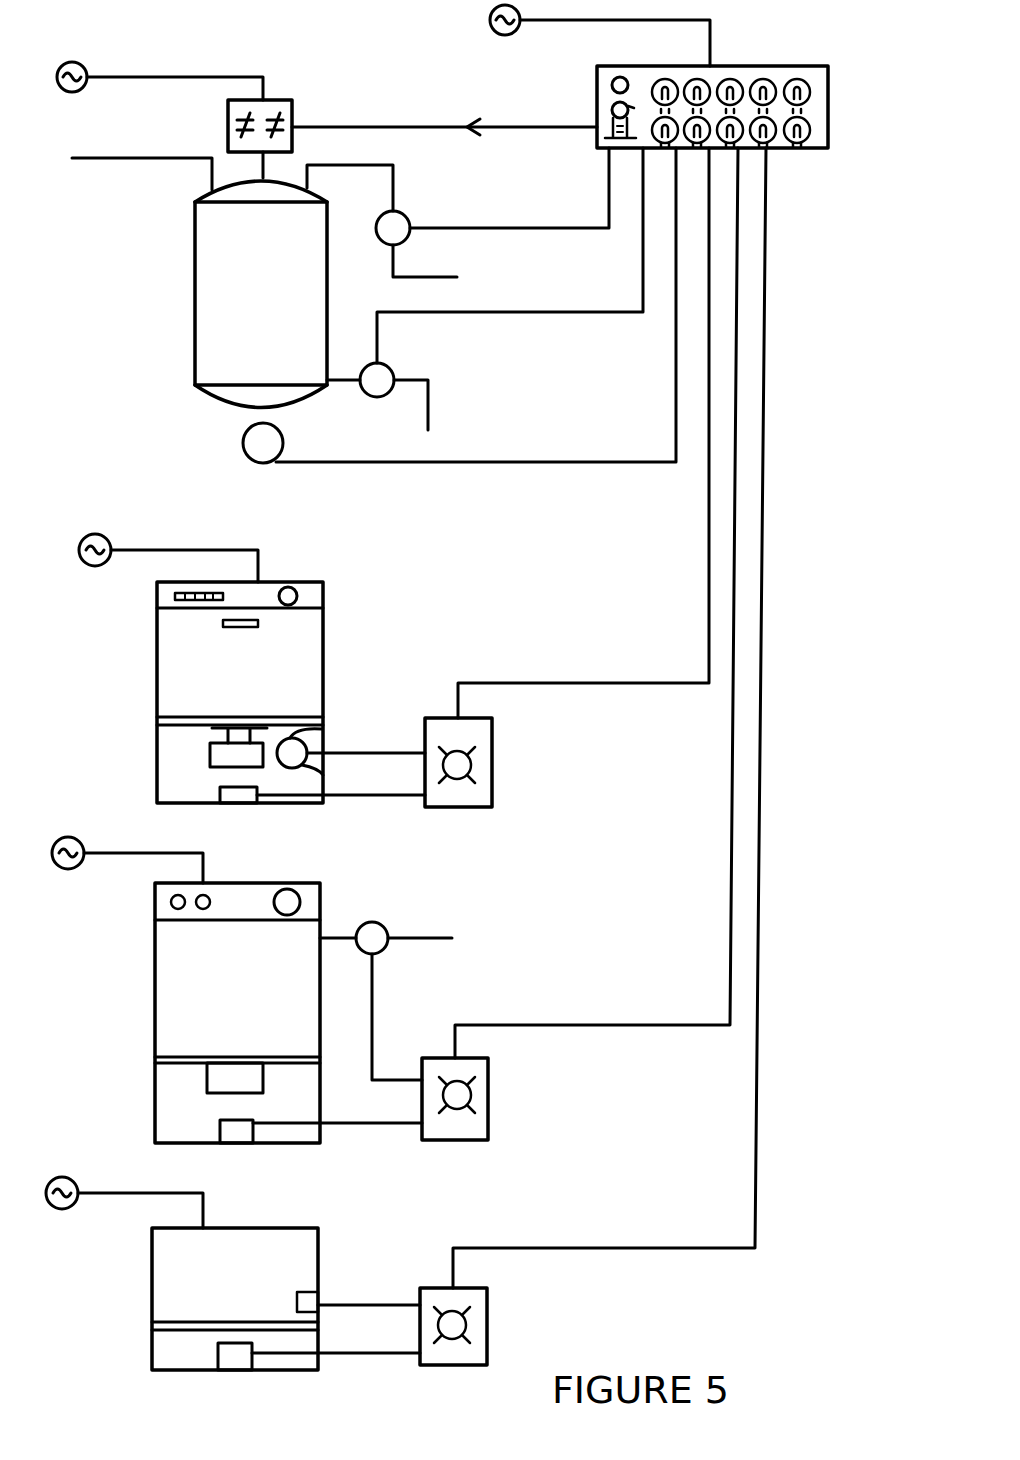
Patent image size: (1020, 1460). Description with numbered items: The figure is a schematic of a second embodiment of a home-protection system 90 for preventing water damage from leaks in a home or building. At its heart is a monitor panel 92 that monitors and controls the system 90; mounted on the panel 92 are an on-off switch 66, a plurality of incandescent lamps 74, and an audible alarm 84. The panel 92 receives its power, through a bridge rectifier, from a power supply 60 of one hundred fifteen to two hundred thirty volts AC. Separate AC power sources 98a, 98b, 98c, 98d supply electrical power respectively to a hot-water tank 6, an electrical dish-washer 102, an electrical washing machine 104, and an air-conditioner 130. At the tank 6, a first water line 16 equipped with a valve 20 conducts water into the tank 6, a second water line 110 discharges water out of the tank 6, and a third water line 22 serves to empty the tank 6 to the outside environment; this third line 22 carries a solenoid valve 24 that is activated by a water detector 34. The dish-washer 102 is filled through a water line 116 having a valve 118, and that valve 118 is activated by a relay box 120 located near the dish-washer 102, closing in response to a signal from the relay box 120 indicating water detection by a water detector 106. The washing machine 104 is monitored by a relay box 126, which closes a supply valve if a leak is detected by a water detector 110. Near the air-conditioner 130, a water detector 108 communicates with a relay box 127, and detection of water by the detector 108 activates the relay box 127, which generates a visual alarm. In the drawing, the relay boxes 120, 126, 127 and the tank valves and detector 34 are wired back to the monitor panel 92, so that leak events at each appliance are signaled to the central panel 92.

The hot-water tank 6 is at (194, 273).
The first water line 16 is at (457, 277).
The valve 20 is at (410, 215).
The third water line 22 is at (430, 418).
The solenoid valve 24 is at (390, 368).
The water detector 34 is at (243, 442).
The power supply 60 is at (510, 36).
The on-off switch 66 is at (611, 88).
The incandescent lamps 74 is at (810, 130).
The audible alarm 84 is at (610, 135).
The home-protection system 90 is at (417, 99).
The monitor panel 92 is at (828, 105).
The power source 98a is at (81, 64).
The power source 98b is at (100, 534).
The power source 98c is at (68, 870).
The power source 98d is at (62, 1210).
The electrical dish-washer 102 is at (323, 640).
The electrical washing machine 104 is at (155, 977).
The water detector 106 is at (292, 110).
The water detector 108 is at (236, 1372).
The second water line / water detector 110 is at (142, 158).
The water line 116 is at (323, 728).
The valve 118 is at (323, 775).
The relay box 120 is at (492, 772).
The relay box 126 is at (488, 1100).
The relay box 127 is at (487, 1335).
The air-conditioner 130 is at (152, 1285).